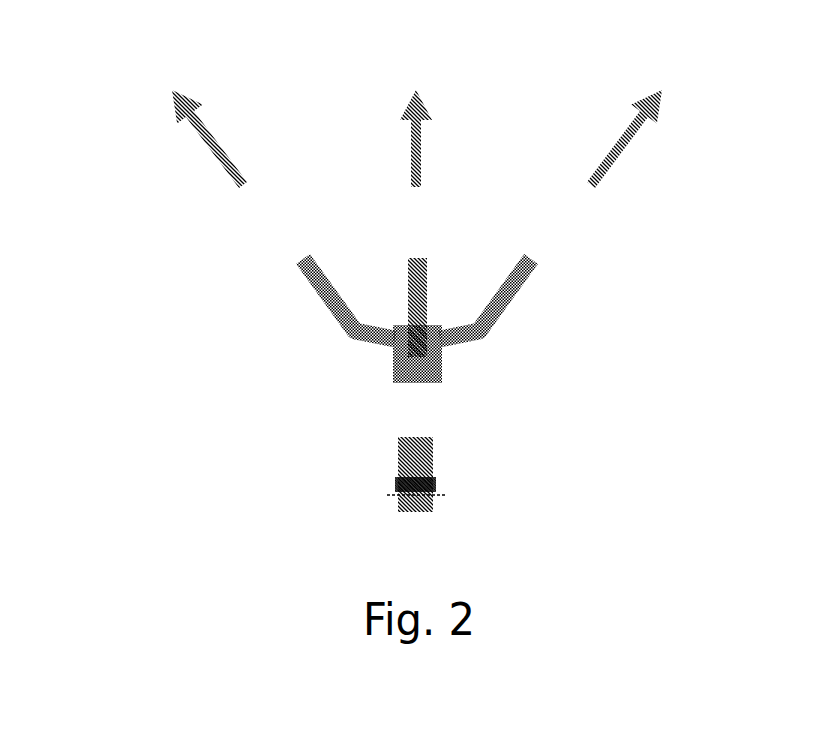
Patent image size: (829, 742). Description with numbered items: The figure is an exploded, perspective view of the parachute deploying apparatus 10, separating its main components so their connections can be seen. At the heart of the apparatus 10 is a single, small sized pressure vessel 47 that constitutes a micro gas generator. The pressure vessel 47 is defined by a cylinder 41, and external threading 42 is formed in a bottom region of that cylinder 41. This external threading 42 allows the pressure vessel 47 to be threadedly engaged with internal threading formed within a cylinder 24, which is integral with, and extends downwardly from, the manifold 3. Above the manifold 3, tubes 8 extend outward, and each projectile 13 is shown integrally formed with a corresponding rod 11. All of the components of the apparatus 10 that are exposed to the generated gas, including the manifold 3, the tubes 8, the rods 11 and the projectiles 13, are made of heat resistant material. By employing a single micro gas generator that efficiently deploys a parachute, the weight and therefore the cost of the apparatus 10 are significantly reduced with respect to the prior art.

The parachute deploying apparatus 10 is at (124, 214).
The rod 11 is at (623, 148).
The projectile 13 is at (643, 103).
The tube 8 is at (328, 302).
The manifold 3 is at (400, 323).
The cylinder 24 is at (423, 375).
The pressure vessel 47 is at (398, 447).
The external threading 42 is at (437, 485).
The cylinder 41 is at (398, 507).